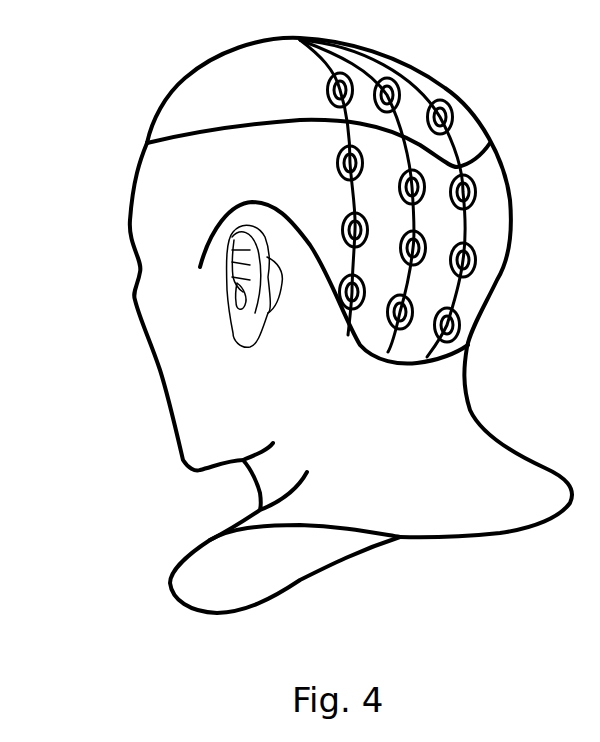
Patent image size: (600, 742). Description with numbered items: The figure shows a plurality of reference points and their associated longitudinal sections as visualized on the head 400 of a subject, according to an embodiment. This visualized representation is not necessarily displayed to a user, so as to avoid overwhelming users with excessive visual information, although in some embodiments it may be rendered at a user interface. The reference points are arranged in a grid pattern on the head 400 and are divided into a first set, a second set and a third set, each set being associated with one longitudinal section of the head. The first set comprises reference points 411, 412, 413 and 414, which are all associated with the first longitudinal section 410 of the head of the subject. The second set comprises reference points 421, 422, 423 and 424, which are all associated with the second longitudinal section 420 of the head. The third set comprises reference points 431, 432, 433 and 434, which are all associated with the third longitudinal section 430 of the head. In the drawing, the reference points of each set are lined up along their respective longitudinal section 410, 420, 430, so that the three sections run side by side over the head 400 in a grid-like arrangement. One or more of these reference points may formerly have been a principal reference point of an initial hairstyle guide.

The head 400 is at (172, 165).
The first longitudinal section 410 is at (355, 343).
The reference point 411 is at (327, 95).
The reference point 412 is at (333, 160).
The reference point 413 is at (340, 225).
The reference point 414 is at (367, 290).
The second longitudinal section 420 is at (397, 356).
The reference point 421 is at (383, 73).
The reference point 422 is at (403, 180).
The reference point 423 is at (403, 243).
The reference point 424 is at (418, 312).
The third longitudinal section 430 is at (430, 367).
The reference point 431 is at (450, 102).
The reference point 432 is at (452, 192).
The reference point 433 is at (480, 255).
The reference point 434 is at (432, 322).